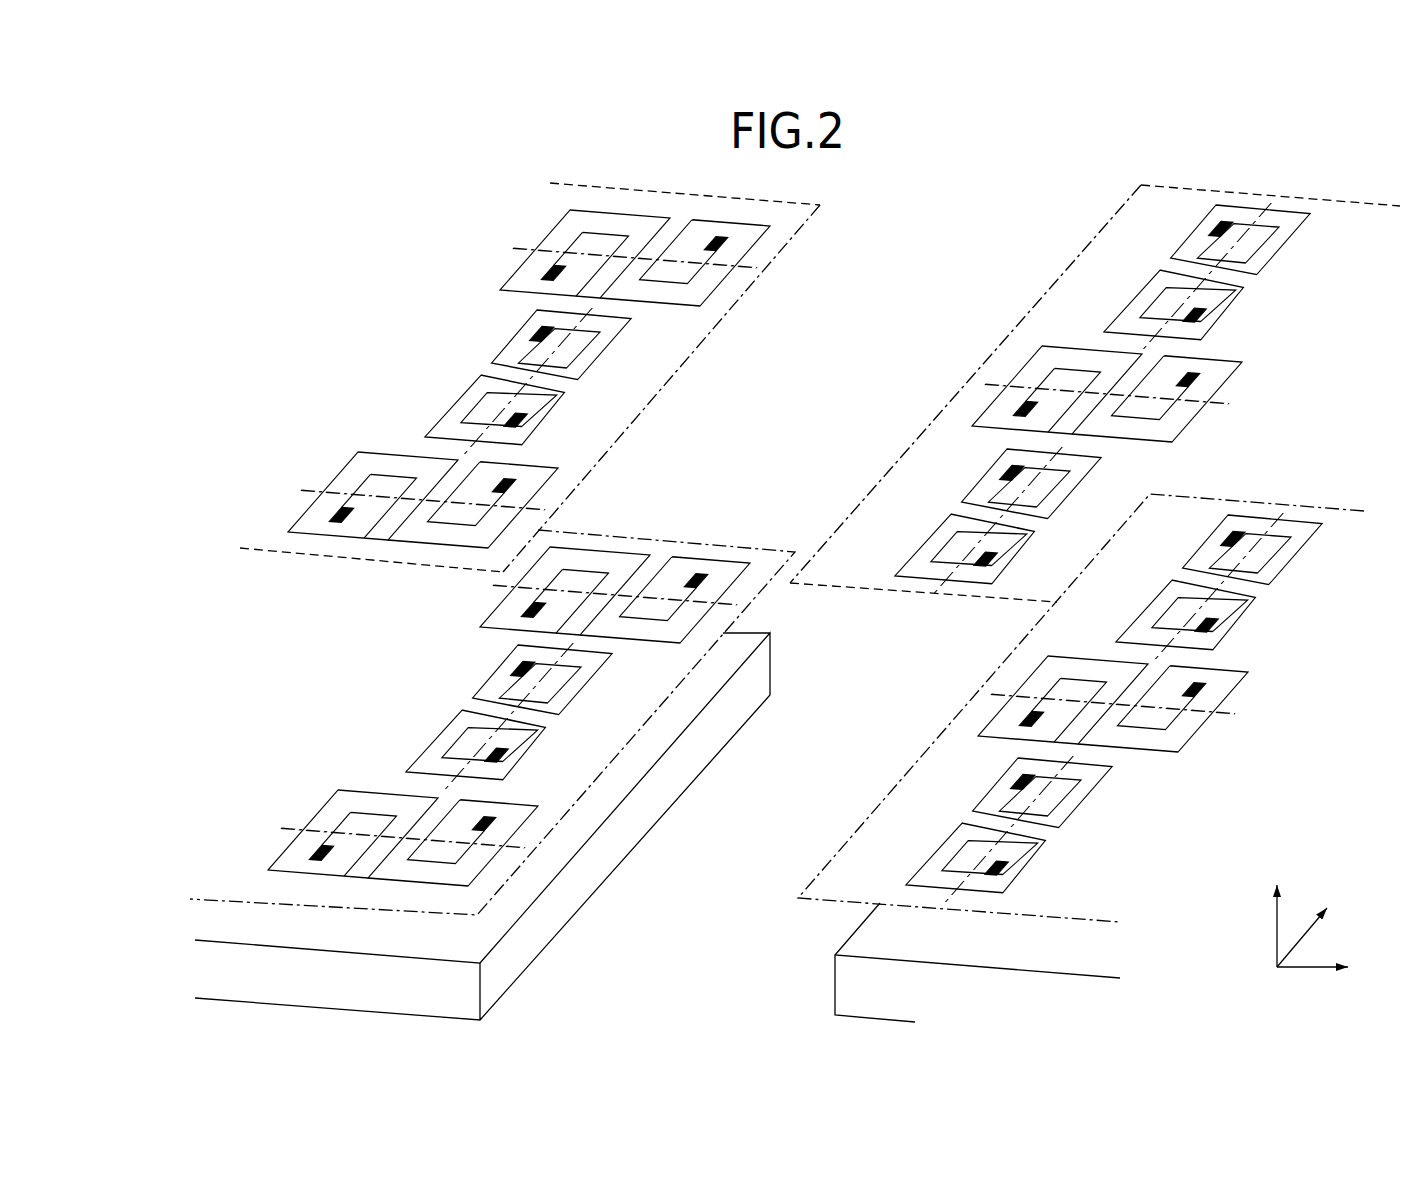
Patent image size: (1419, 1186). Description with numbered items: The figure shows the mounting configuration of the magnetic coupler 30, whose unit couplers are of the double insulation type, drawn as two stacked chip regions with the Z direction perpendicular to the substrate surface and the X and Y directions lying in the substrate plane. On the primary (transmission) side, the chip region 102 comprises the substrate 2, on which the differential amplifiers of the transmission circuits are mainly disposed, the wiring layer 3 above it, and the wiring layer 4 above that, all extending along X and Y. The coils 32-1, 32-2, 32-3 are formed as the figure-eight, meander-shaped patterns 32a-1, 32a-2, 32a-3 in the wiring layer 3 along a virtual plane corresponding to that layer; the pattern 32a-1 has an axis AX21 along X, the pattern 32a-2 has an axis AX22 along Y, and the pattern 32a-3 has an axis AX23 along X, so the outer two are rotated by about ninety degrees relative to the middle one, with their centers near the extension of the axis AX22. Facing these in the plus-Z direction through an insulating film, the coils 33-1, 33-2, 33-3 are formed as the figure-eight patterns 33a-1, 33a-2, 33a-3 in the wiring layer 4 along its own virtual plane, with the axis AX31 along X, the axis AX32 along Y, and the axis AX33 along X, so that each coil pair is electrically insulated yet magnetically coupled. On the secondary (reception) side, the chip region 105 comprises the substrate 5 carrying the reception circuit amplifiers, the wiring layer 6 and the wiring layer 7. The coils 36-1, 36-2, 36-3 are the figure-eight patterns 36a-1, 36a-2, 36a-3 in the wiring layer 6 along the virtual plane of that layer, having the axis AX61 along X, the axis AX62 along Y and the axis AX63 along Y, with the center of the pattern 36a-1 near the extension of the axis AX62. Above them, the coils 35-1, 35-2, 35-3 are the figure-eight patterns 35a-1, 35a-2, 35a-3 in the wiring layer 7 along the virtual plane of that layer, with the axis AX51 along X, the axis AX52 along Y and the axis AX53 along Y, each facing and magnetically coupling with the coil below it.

The magnetic coupler 30 is at (322, 165).
The chip region 102 is at (566, 180).
The chip region 105 is at (1147, 180).
The substrate 2 is at (503, 975).
The substrate 5 is at (847, 983).
The wiring layer 3 is at (200, 894).
The wiring layer 4 is at (265, 559).
The wiring layer 6 is at (1103, 922).
The wiring layer 7 is at (1178, 184).
The coil 33-1 is at (816, 217).
The coil 33-2 is at (746, 336).
The coil 33-3 is at (600, 472).
The pattern 33a-1 is at (760, 257).
The pattern 33a-2 is at (608, 357).
The pattern 33a-3 is at (548, 496).
The coil 32-1 is at (738, 478).
The coil 32-2 is at (642, 722).
The coil 32-3 is at (574, 862).
The pattern 32a-1 is at (718, 550).
The pattern 32a-2 is at (588, 718).
The pattern 32a-3 is at (506, 850).
The coil 35-1 is at (978, 320).
The coil 35-2 is at (1095, 206).
The coil 35-3 is at (900, 406).
The pattern 35a-1 is at (1005, 376).
The pattern 35a-2 is at (1123, 294).
The pattern 35a-3 is at (938, 502).
The coil 36-1 is at (1296, 692).
The coil 36-2 is at (1358, 440).
The coil 36-3 is at (1160, 808).
The pattern 36a-1 is at (1240, 702).
The pattern 36a-2 is at (1320, 514).
The pattern 36a-3 is at (1090, 806).
The axis AX31 is at (510, 250).
The axis AX32 is at (450, 452).
The axis AX33 is at (300, 497).
The axis AX21 is at (490, 596).
The axis AX22 is at (430, 793).
The axis AX23 is at (292, 836).
The axis AX51 is at (1208, 409).
The axis AX52 is at (1153, 347).
The axis AX53 is at (950, 592).
The axis AX61 is at (1220, 716).
The axis AX62 is at (1168, 656).
The axis AX63 is at (962, 903).